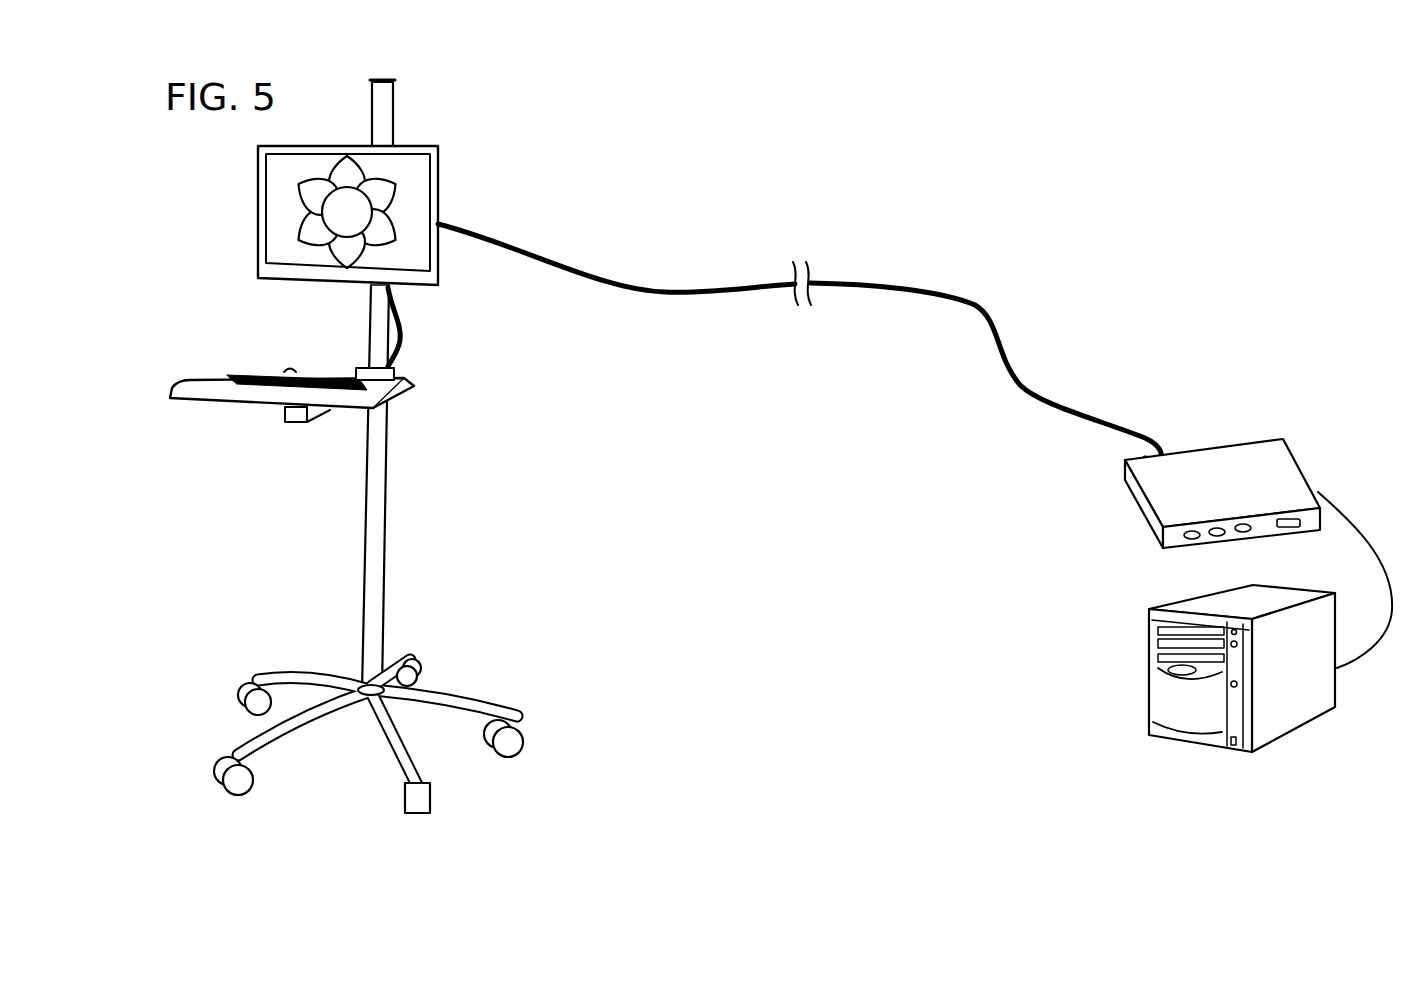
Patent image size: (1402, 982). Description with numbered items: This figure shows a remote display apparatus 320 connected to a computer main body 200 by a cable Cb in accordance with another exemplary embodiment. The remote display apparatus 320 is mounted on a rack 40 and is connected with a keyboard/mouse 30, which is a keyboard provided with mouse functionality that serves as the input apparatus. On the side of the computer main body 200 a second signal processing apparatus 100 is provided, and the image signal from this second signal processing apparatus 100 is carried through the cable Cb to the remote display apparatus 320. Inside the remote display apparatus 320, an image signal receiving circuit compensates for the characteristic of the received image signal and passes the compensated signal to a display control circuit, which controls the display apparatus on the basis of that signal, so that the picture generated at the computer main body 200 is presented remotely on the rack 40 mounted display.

The remote display apparatus 320 is at (437, 205).
The keyboard/mouse 30 is at (405, 380).
The rack 40 is at (363, 553).
The cable Cb is at (663, 291).
The second signal processing apparatus 100 is at (1150, 456).
The computer main body 200 is at (1170, 740).